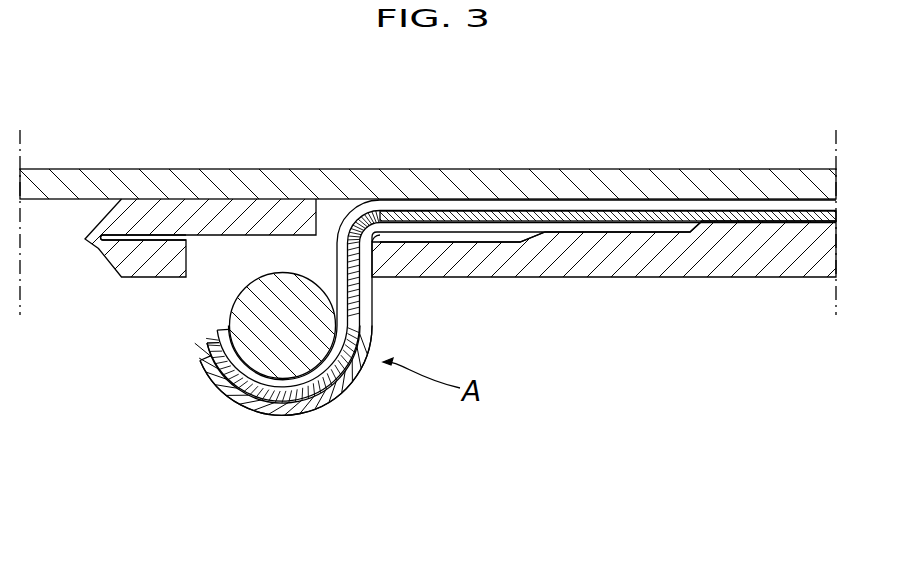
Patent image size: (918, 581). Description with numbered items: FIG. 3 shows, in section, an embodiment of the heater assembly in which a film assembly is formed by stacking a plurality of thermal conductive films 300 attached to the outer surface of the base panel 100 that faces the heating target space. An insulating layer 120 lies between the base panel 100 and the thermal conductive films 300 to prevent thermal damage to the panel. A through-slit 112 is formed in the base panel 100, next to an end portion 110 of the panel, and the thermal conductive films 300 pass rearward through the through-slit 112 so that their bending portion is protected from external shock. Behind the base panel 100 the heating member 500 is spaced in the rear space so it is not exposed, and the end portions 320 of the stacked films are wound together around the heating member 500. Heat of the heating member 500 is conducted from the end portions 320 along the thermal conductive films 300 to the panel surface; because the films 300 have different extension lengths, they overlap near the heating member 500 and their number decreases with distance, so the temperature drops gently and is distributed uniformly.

The base panel 100 is at (755, 265).
The end portion of the base panel 110 is at (283, 212).
The through-slit 112 is at (233, 273).
The insulating layer 120 is at (731, 220).
The thermal conductive film 300 is at (652, 232).
The end portion of the thermal conductive film 320 is at (210, 380).
The heating member 500 is at (290, 360).